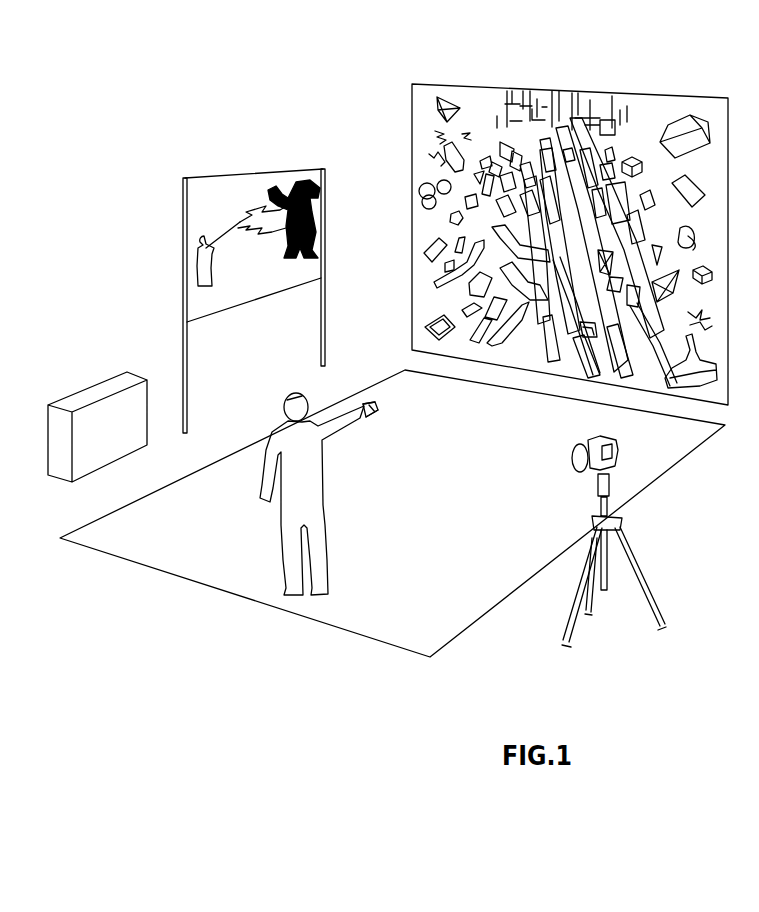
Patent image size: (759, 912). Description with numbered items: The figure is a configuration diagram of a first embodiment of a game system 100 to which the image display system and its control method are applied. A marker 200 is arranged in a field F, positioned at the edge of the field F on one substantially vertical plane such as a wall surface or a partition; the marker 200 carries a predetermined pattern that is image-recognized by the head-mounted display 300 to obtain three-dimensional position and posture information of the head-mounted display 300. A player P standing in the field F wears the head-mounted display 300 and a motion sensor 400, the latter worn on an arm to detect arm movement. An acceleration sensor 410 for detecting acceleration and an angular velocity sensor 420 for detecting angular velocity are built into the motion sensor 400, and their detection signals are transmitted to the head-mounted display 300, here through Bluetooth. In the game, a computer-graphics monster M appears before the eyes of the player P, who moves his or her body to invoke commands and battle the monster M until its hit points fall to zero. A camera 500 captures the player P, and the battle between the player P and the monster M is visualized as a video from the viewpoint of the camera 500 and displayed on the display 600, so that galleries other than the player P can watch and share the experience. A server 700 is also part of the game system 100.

The game system 100 is at (313, 82).
The marker 200 is at (650, 94).
The head-mounted display 300 is at (310, 394).
The motion sensor 400 is at (368, 416).
The acceleration sensor 410 is at (369, 403).
The angular velocity sensor 420 is at (372, 413).
The camera 500 is at (622, 452).
The display 600 is at (235, 174).
The server 700 is at (90, 394).
The monster M is at (320, 218).
The player P is at (200, 268).
The field F is at (370, 641).